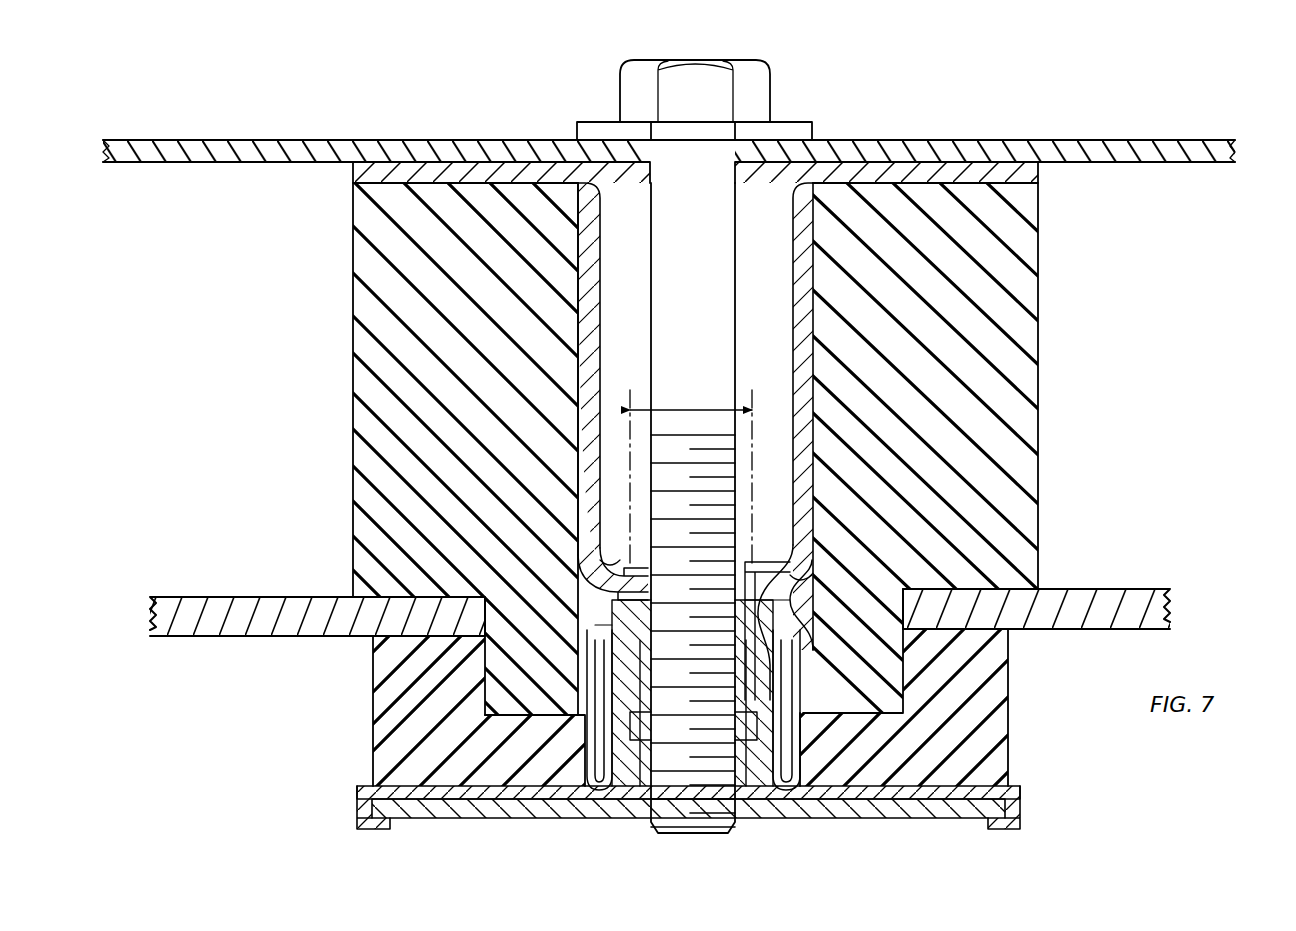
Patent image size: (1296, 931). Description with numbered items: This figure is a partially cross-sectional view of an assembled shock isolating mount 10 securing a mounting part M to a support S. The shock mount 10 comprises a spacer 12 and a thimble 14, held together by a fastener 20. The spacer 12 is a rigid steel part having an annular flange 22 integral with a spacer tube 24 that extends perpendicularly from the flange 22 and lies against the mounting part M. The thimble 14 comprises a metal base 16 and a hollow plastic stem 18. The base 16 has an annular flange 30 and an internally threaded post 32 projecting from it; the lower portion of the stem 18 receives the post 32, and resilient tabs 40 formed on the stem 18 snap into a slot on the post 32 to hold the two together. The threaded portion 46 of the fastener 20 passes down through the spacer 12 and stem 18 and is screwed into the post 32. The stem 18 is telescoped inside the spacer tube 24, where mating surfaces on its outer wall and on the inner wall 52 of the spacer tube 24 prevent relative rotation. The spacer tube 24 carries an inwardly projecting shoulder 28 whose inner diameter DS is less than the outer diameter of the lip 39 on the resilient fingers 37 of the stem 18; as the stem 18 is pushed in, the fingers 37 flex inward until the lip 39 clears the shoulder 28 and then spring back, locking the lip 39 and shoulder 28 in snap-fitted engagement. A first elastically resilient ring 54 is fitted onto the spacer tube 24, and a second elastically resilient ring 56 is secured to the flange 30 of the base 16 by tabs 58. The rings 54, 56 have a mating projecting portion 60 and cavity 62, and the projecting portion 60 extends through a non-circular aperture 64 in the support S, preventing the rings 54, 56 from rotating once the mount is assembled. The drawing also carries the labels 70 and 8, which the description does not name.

The mounting part M is at (236, 140).
The annular flange 22 is at (438, 162).
The fastener 20 is at (618, 96).
The first elastically resilient ring 54 is at (712, 128).
The bolt 70 is at (651, 145).
The inner diameter of shoulder DS is at (692, 406).
The spacer tube 24 is at (595, 350).
The spacer 12 is at (578, 488).
The fingers 37 is at (600, 580).
The shoulder 28 is at (596, 620).
The lip 39 is at (795, 560).
The stem 18 is at (780, 650).
The support S is at (195, 648).
The aperture 64 is at (482, 645).
The shock isolating mount 10 is at (370, 646).
The projecting portion 60 is at (890, 660).
The second elastically resilient ring 56 is at (1002, 736).
The base 16 is at (599, 792).
The post 32 is at (755, 778).
The tab 40 is at (652, 730).
The threaded portion 46 is at (706, 832).
The inner wall 52 is at (628, 814).
The annular flange 30 is at (848, 800).
The thimble 14 is at (946, 820).
The tabs 58 is at (358, 802).
The base flange 8 is at (400, 828).
The cavity 62 is at (546, 712).